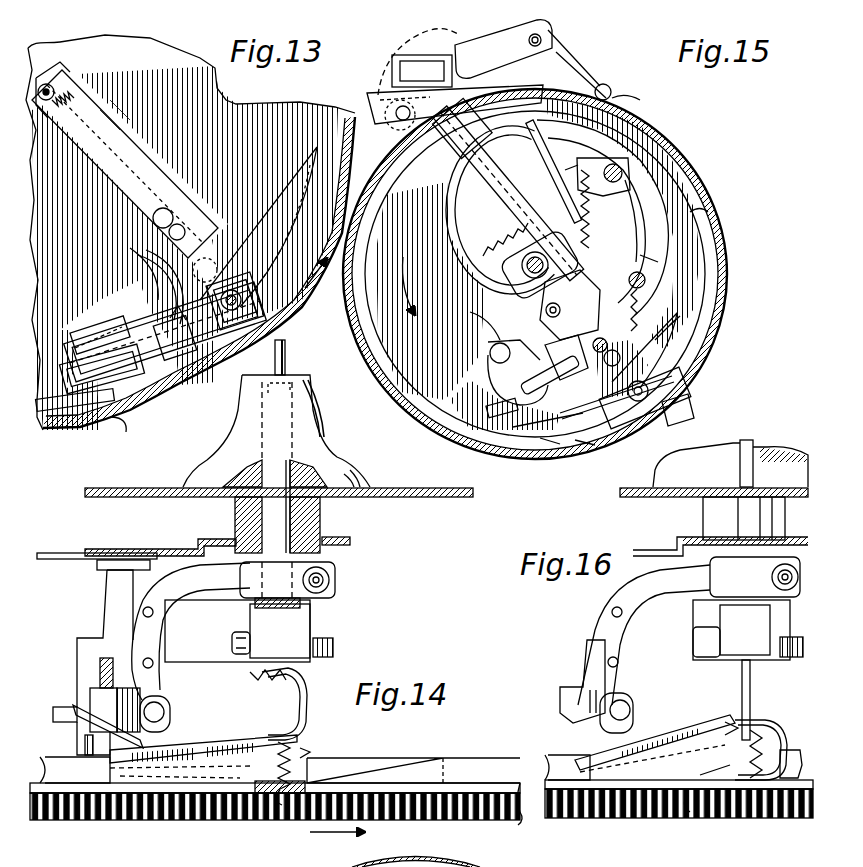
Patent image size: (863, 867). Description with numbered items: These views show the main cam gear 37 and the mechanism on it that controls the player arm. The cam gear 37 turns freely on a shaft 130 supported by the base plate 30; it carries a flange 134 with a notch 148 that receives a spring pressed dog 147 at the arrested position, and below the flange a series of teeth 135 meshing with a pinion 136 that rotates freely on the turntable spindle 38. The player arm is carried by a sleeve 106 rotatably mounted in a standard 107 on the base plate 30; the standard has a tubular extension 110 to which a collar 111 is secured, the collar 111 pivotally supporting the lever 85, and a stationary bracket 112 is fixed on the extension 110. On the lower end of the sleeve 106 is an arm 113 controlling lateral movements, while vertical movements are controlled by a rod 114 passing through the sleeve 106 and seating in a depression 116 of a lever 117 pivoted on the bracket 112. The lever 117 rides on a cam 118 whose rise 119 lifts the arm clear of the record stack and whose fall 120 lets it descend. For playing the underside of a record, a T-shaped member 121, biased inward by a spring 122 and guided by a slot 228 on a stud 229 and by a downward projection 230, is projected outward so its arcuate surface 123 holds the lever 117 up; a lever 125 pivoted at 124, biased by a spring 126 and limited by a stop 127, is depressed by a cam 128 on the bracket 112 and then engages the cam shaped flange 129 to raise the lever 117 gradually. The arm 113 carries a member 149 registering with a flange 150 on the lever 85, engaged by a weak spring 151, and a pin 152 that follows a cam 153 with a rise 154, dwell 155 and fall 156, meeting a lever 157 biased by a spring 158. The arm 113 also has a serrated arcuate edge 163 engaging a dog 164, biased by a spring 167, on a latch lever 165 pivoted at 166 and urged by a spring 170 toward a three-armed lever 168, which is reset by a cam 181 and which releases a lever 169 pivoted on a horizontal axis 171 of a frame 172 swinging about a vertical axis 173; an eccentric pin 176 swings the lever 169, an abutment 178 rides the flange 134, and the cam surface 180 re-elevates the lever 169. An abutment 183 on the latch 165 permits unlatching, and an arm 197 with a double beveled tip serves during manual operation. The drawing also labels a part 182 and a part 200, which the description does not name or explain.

In FIG. 14, the base plate 30 is at (460, 505).
In FIG. 16, the base plate 30 is at (665, 502).
In FIG. 13, the cam gear 37 is at (190, 232).
In FIG. 15, the cam gear 37 is at (538, 264).
In FIG. 14, the cam gear 37 is at (70, 826).
In FIG. 16, the cam gear 37 is at (615, 822).
In FIG. 15, the turntable spindle 38 is at (390, 125).
In FIG. 14, the lever 85 is at (158, 548).
In FIG. 16, the lever 85 is at (668, 550).
In FIG. 14, the sleeve 106 is at (276, 445).
In FIG. 14, the standard 107 is at (268, 472).
In FIG. 14, the tubular extension 110 is at (322, 520).
In FIG. 14, the collar 111 is at (240, 520).
In FIG. 16, the collar 111 is at (744, 518).
In FIG. 13, the stationary bracket 112 is at (165, 402).
In FIG. 15, the stationary bracket 112 is at (636, 432).
In FIG. 14, the stationary bracket 112 is at (287, 585).
In FIG. 16, the stationary bracket 112 is at (689, 631).
In FIG. 15, the arm 113 is at (550, 379).
In FIG. 14, the arm 113 is at (237, 631).
In FIG. 15, the rod 114 is at (692, 379).
In FIG. 14, the rod 114 is at (286, 358).
In FIG. 16, the rod 114 is at (742, 686).
In FIG. 13, the depression 116 is at (260, 298).
In FIG. 14, the depression 116 is at (280, 686).
In FIG. 16, the depression 116 is at (745, 716).
In FIG. 13, the lever 117 is at (190, 322).
In FIG. 14, the lever 117 is at (310, 690).
In FIG. 16, the lever 117 is at (795, 720).
In FIG. 13, the cam 118 is at (348, 130).
In FIG. 15, the cam 118 is at (408, 398).
In FIG. 14, the cam 118 is at (276, 793).
In FIG. 13, the cam rise 119 is at (80, 338).
In FIG. 15, the cam rise 119 is at (583, 450).
In FIG. 14, the cam rise 119 is at (222, 806).
In FIG. 16, the cam rise 119 is at (690, 822).
In FIG. 13, the cam fall 120 is at (338, 143).
In FIG. 15, the cam fall 120 is at (695, 350).
In FIG. 14, the cam fall 120 is at (380, 760).
In FIG. 16, the cam fall 120 is at (745, 833).
In FIG. 13, the T-shaped member 121 is at (125, 164).
In FIG. 15, the T-shaped member 121 is at (601, 348).
In FIG. 13, the spring 122 is at (108, 84).
In FIG. 13, the arcuate surface 123 is at (298, 209).
In FIG. 15, the arcuate surface 123 is at (705, 334).
In FIG. 14, the arcuate surface 123 is at (336, 760).
In FIG. 16, the arcuate surface 123 is at (792, 755).
In FIG. 13, the pivot 124 is at (116, 330).
In FIG. 15, the pivot 124 is at (492, 410).
In FIG. 14, the pivot 124 is at (108, 771).
In FIG. 16, the pivot 124 is at (598, 755).
In FIG. 13, the lever 125 is at (142, 250).
In FIG. 15, the lever 125 is at (617, 397).
In FIG. 14, the lever 125 is at (252, 740).
In FIG. 16, the lever 125 is at (721, 803).
In FIG. 13, the spring 126 is at (212, 258).
In FIG. 14, the spring 126 is at (302, 752).
In FIG. 16, the spring 126 is at (722, 727).
In FIG. 13, the stop 127 is at (145, 287).
In FIG. 15, the stop 127 is at (550, 420).
In FIG. 14, the stop 127 is at (195, 718).
In FIG. 16, the stop 127 is at (690, 745).
In FIG. 13, the cam 128 is at (40, 435).
In FIG. 15, the cam 128 is at (550, 450).
In FIG. 14, the cam 128 is at (102, 698).
In FIG. 16, the cam 128 is at (577, 690).
In FIG. 14, the cam shaped flange 129 is at (220, 742).
In FIG. 16, the cam shaped flange 129 is at (636, 713).
In FIG. 15, the shaft 130 is at (519, 265).
In FIG. 13, the flange 134 is at (124, 432).
In FIG. 15, the flange 134 is at (705, 211).
In FIG. 14, the teeth 135 is at (122, 822).
In FIG. 16, the teeth 135 is at (666, 823).
In FIG. 15, the pinion 136 is at (452, 160).
In FIG. 15, the spring pressed dog 147 is at (592, 72).
In FIG. 15, the notch 148 is at (612, 96).
In FIG. 15, the member 149 is at (482, 350).
In FIG. 14, the member 149 is at (172, 584).
In FIG. 14, the flange 150 is at (102, 574).
In FIG. 14, the weak spring 151 is at (100, 554).
In FIG. 15, the pin 152 is at (478, 314).
In FIG. 14, the pin 152 is at (88, 722).
In FIG. 15, the cam 153 is at (442, 204).
In FIG. 15, the rise 154 is at (446, 217).
In FIG. 15, the dwell 155 is at (655, 138).
In FIG. 15, the fall 156 is at (645, 200).
In FIG. 15, the lever 157 is at (652, 255).
In FIG. 15, the spring 158 is at (577, 190).
In FIG. 15, the serrated arcuate edge 163 is at (566, 357).
In FIG. 15, the dog 164 is at (628, 297).
In FIG. 15, the latch lever 165 is at (565, 170).
In FIG. 15, the pivot 166 is at (540, 264).
In FIG. 15, the spring 167 is at (594, 234).
In FIG. 15, the three-armed lever 168 is at (458, 176).
In FIG. 15, the lever 169 is at (515, 112).
In FIG. 15, the spring 170 is at (500, 239).
In FIG. 15, the horizontal axis 171 is at (422, 71).
In FIG. 15, the frame 172 is at (503, 49).
In FIG. 15, the vertical axis 173 is at (542, 34).
In FIG. 15, the eccentric pin 176 is at (418, 62).
In FIG. 15, the abutment 178 is at (480, 103).
In FIG. 15, the cam surface 180 is at (540, 140).
In FIG. 15, the cam 181 is at (490, 346).
In FIG. 14, the cam 181 is at (70, 730).
In FIG. 15, the arm 182 is at (530, 348).
In FIG. 15, the abutment 183 is at (547, 308).
In FIG. 15, the arm 197 is at (690, 406).
In FIG. 14, the arm 197 is at (335, 638).
In FIG. 16, the arm 197 is at (772, 656).
In FIG. 15, the lever 200 is at (562, 52).
In FIG. 13, the slot 228 is at (176, 210).
In FIG. 13, the stud 229 is at (186, 228).
In FIG. 14, the downward projection 230 is at (275, 800).